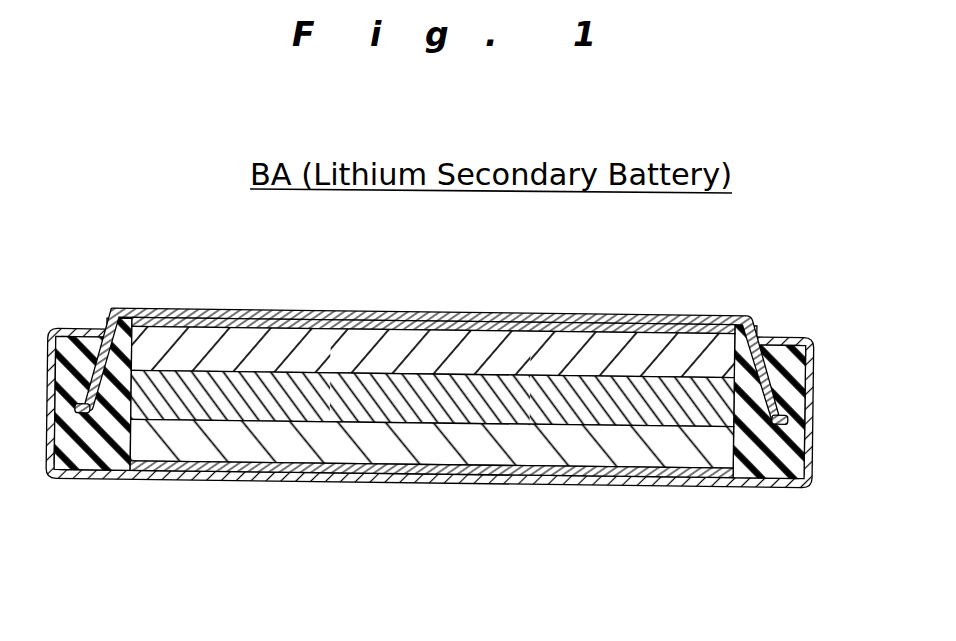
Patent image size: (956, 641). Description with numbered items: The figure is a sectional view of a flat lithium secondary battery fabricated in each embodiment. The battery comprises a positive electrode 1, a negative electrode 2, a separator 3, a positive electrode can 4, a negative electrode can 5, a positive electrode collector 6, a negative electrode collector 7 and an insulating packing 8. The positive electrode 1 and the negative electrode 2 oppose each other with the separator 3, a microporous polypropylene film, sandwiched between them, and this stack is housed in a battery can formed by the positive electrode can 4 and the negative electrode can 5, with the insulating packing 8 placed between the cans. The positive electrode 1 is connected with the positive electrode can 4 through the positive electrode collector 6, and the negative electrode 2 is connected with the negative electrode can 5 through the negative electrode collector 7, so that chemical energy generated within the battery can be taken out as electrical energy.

The positive electrode 1 is at (293, 447).
The negative electrode 2 is at (398, 346).
The separator 3 is at (178, 408).
The positive electrode can 4 is at (733, 485).
The negative electrode can 5 is at (160, 312).
The positive electrode collector 6 is at (552, 469).
The negative electrode collector 7 is at (524, 327).
The insulating packing 8 is at (795, 368).